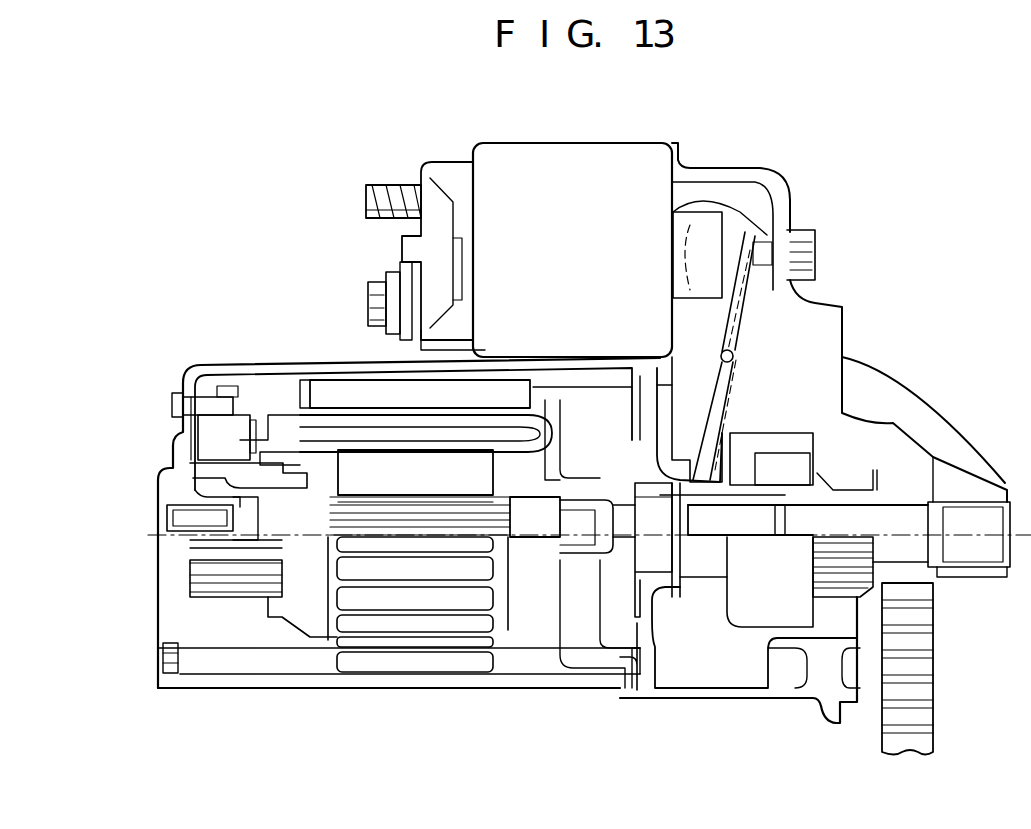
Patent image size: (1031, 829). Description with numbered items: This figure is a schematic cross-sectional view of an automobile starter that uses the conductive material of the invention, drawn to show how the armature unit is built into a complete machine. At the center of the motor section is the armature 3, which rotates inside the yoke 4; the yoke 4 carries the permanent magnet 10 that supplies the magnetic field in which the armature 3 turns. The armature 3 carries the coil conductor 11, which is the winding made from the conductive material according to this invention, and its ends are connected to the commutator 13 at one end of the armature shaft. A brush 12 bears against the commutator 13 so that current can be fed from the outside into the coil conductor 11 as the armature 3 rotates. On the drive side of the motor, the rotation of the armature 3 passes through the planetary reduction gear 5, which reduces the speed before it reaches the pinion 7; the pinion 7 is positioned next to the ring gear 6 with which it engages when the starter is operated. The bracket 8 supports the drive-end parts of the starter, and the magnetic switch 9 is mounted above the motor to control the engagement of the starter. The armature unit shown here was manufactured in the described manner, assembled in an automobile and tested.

The armature 3 is at (385, 598).
The yoke 4 is at (465, 692).
The planetary reduction gear 5 is at (590, 548).
The ring gear 6 is at (942, 618).
The pinion 7 is at (870, 470).
The bracket 8 is at (845, 307).
The magnetic switch 9 is at (492, 165).
The permanent magnet 10 is at (347, 397).
The coil conductor 11 is at (302, 425).
The brush 12 is at (207, 435).
The commutator 13 is at (225, 597).